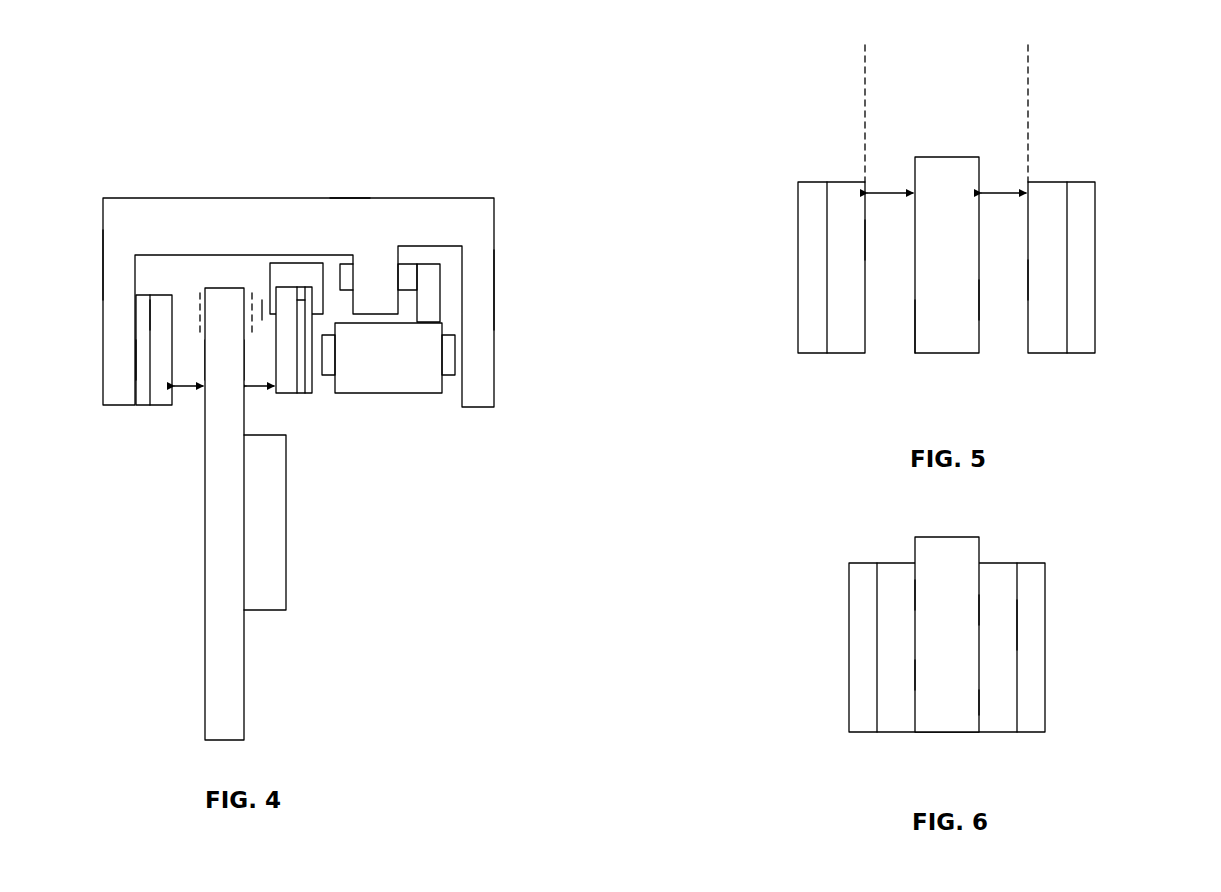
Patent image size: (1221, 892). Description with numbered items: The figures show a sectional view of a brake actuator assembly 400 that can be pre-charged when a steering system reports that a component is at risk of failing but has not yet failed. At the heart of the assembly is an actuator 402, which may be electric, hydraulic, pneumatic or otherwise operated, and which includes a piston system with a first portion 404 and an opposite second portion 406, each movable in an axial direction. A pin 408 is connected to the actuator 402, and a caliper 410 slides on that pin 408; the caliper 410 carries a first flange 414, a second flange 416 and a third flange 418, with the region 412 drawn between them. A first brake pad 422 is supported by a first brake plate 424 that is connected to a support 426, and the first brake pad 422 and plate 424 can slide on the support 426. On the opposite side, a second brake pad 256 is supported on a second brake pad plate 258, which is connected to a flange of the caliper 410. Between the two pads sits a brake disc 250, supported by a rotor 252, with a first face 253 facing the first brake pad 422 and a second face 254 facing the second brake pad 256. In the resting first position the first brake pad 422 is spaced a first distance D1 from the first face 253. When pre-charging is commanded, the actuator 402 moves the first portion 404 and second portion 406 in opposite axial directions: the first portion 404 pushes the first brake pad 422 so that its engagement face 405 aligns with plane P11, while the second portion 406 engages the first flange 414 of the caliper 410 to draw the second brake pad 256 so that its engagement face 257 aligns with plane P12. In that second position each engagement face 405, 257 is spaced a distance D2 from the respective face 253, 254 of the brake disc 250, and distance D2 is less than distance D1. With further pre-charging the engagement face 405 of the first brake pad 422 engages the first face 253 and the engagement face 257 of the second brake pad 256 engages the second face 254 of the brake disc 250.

In FIG. 4, the brake disc 250 is at (218, 622).
In FIG. 5, the brake disc 250 is at (958, 338).
In FIG. 6, the brake disc 250 is at (938, 708).
In FIG. 4, the rotor 252 is at (262, 573).
In FIG. 4, the first face 253 is at (258, 362).
In FIG. 5, the first face 253 is at (980, 295).
In FIG. 6, the first face 253 is at (982, 610).
In FIG. 4, the second face 254 is at (205, 358).
In FIG. 5, the second face 254 is at (915, 325).
In FIG. 6, the second face 254 is at (912, 593).
In FIG. 4, the second brake pad 256 is at (157, 312).
In FIG. 5, the second brake pad 256 is at (845, 298).
In FIG. 6, the second brake pad 256 is at (885, 618).
In FIG. 4, the engagement face 257 is at (170, 315).
In FIG. 5, the engagement face 257 is at (866, 252).
In FIG. 6, the engagement face 257 is at (912, 683).
In FIG. 4, the second brake pad plate 258 is at (148, 357).
In FIG. 5, the second brake pad plate 258 is at (808, 210).
In FIG. 6, the second brake pad plate 258 is at (862, 662).
In FIG. 4, the brake actuator assembly 400 is at (487, 164).
In FIG. 4, the actuator 402 is at (405, 378).
In FIG. 4, the first portion 404 is at (330, 372).
In FIG. 4, the engagement face 405 is at (276, 290).
In FIG. 5, the engagement face 405 is at (1028, 276).
In FIG. 6, the engagement face 405 is at (979, 694).
In FIG. 4, the second portion 406 is at (452, 357).
In FIG. 4, the pin 408 is at (408, 282).
In FIG. 4, the caliper 410 is at (498, 220).
In FIG. 4, the top wall 412 is at (345, 220).
In FIG. 4, the first flange 414 is at (486, 283).
In FIG. 4, the second flange 416 is at (118, 262).
In FIG. 4, the third flange 418 is at (375, 288).
In FIG. 4, the first brake pad 422 is at (300, 410).
In FIG. 5, the first brake pad 422 is at (1055, 218).
In FIG. 6, the first brake pad 422 is at (1010, 628).
In FIG. 4, the first brake plate 424 is at (303, 297).
In FIG. 5, the first brake plate 424 is at (1097, 236).
In FIG. 6, the first brake plate 424 is at (1035, 655).
In FIG. 4, the support 426 is at (285, 275).
In FIG. 4, the first distance D1 is at (186, 402).
In FIG. 5, the distance D2 is at (885, 190).
In FIG. 4, the plane P11 is at (276, 338).
In FIG. 5, the plane P11 is at (1030, 95).
In FIG. 4, the plane P12 is at (200, 293).
In FIG. 5, the plane P12 is at (864, 95).